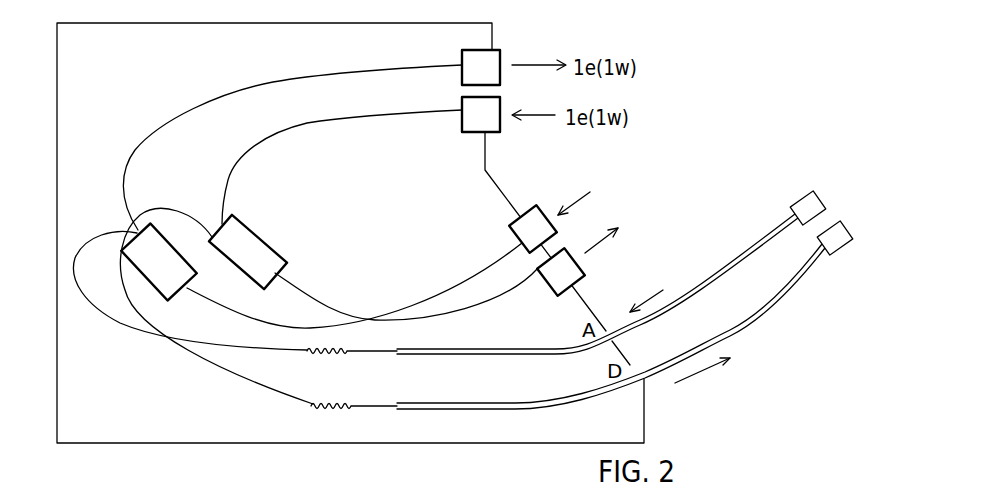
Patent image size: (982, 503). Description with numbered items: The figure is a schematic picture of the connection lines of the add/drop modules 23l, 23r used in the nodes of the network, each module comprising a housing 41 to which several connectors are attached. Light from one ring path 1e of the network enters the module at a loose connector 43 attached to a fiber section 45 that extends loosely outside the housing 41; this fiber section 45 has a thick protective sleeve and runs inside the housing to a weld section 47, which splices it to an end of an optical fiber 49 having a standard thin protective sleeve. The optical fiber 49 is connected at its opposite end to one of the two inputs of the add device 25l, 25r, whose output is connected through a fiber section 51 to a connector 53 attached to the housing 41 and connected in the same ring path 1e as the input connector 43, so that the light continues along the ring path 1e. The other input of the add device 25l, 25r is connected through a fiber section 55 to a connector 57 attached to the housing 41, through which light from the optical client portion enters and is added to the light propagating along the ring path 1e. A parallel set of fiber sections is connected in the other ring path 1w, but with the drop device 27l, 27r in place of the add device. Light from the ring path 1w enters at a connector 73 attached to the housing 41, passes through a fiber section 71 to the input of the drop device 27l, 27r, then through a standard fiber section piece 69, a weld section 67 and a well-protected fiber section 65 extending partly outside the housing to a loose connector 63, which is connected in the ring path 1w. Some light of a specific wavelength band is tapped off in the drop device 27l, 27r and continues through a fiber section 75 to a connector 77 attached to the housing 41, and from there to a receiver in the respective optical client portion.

The housing 41 is at (110, 433).
The add/drop module 23l is at (270, 147).
The add/drop module 23r is at (270, 147).
The fiber section 51 is at (123, 168).
The fiber section 71 is at (227, 176).
The connector 53 is at (462, 57).
The connector 73 is at (462, 128).
The add device 25l is at (166, 278).
The add device 25r is at (155, 302).
The drop device 27l is at (258, 250).
The drop device 27r is at (247, 218).
The fiber section 55 is at (244, 321).
The fiber section 75 is at (313, 300).
The optical fiber 49 is at (262, 347).
The fiber section piece 69 is at (257, 388).
The weld section 47 is at (340, 347).
The weld section 67 is at (343, 403).
The connector 57 is at (510, 226).
The connector 77 is at (566, 308).
The fiber section 45 is at (597, 275).
The fiber section 65 is at (611, 326).
The connector 43 is at (800, 196).
The connector 63 is at (846, 254).
The ring path 1e is at (768, 233).
The ring path 1w is at (703, 347).